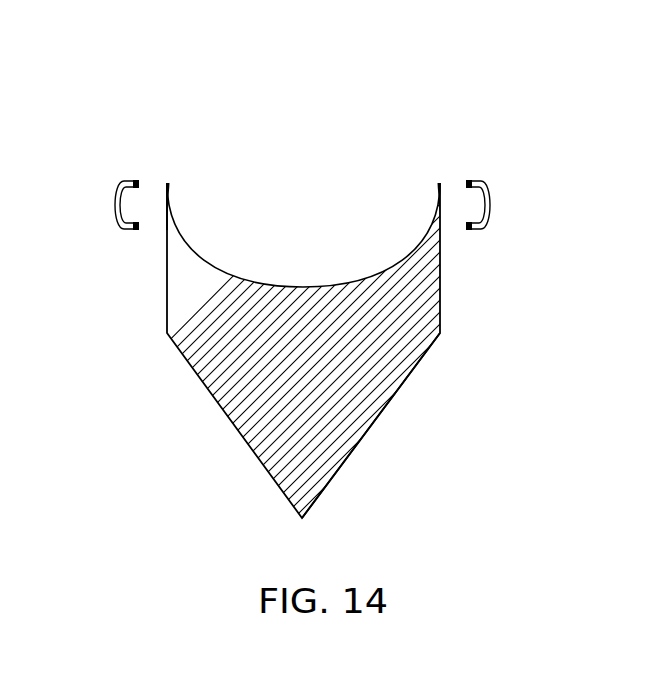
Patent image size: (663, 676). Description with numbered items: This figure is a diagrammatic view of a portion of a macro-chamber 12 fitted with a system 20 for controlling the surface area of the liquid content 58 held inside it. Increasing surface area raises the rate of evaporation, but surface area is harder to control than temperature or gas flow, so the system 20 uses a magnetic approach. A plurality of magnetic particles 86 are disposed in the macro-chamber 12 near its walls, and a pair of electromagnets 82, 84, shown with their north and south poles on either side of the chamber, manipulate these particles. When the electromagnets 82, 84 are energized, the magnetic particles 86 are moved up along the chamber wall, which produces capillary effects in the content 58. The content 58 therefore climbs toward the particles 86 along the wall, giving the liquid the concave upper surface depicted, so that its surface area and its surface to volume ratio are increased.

The macro-chamber 12 is at (440, 313).
The system for controlling surface area 20 is at (110, 118).
The content 58 is at (391, 393).
The electromagnet 82 is at (114, 193).
The electromagnet 84 is at (491, 193).
The magnetic particles 86 is at (171, 211).